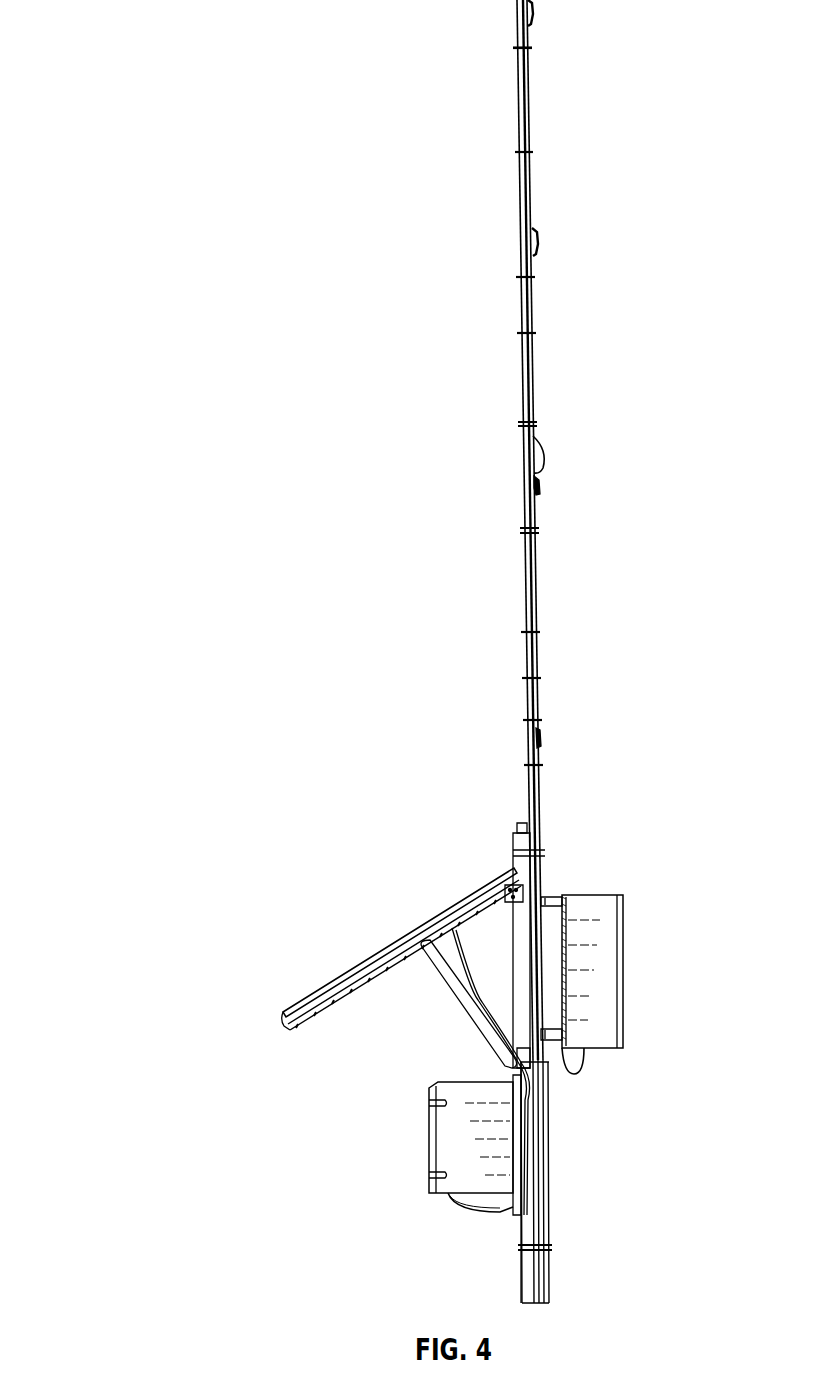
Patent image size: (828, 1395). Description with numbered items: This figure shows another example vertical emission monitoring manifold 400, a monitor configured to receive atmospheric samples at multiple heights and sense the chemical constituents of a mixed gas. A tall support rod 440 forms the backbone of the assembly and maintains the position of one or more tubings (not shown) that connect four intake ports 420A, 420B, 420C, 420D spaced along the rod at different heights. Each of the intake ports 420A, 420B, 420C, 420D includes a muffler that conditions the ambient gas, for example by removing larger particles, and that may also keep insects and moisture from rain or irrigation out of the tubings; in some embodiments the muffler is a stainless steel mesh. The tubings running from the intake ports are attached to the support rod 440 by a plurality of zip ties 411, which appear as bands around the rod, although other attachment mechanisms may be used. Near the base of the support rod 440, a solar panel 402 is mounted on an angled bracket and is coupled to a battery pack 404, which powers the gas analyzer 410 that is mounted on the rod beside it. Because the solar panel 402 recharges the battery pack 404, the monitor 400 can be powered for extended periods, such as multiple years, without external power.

The vertical emission monitoring manifold 400 is at (129, 52).
The solar panel 402 is at (292, 1033).
The battery pack 404 is at (429, 1146).
The gas analyzer 410 is at (624, 978).
The zip ties 411 is at (518, 333).
The intake port 420A is at (540, 10).
The intake port 420B is at (541, 240).
The intake port 420C is at (545, 480).
The intake port 420D is at (547, 740).
The support rod 440 is at (541, 668).